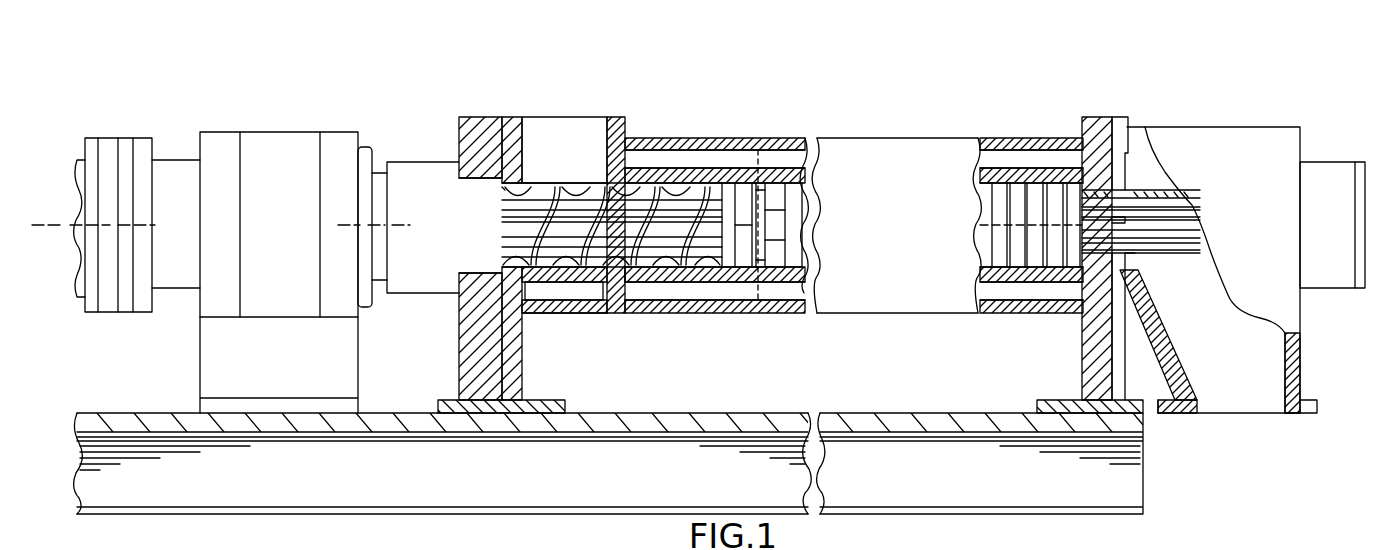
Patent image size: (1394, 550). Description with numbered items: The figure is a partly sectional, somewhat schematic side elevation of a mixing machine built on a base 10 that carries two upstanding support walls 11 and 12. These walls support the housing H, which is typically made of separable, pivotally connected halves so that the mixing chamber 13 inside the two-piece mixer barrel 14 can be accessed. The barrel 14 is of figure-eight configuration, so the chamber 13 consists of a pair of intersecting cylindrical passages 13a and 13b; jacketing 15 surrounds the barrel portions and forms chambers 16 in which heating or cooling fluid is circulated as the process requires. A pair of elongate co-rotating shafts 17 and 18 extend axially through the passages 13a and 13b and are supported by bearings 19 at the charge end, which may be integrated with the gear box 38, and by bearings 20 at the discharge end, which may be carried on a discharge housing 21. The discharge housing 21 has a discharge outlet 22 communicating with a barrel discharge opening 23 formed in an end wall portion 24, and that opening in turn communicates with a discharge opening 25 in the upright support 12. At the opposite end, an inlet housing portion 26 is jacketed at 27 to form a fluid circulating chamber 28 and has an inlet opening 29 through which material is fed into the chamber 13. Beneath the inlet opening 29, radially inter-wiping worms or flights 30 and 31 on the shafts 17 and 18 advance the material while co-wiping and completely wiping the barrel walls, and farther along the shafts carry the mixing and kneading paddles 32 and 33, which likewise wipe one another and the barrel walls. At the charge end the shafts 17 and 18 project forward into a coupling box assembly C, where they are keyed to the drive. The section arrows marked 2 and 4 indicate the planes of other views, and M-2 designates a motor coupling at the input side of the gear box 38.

The base 10 is at (880, 402).
The upstanding support wall 11 is at (460, 360).
The upstanding support wall 12 is at (1088, 369).
The mixing chamber 13 is at (643, 181).
The cylindrical passage 13a is at (688, 183).
The cylindrical passage 13b is at (707, 270).
The mixer barrel 14 is at (693, 273).
The jacketing 15 is at (778, 139).
The fluid chambers 16 is at (808, 160).
The co-rotating shaft 17 is at (1163, 192).
The co-rotating shaft 18 is at (1167, 237).
The bearings 19 is at (468, 250).
The bearings 20 is at (1312, 235).
The discharge housing 21 is at (1257, 135).
The discharge outlet 22 is at (1213, 410).
The barrel discharge opening 23 is at (1130, 262).
The end wall portion 24 is at (1122, 322).
The discharge opening 25 is at (1077, 300).
The inlet housing portion 26 is at (626, 118).
The jacket 27 is at (597, 288).
The fluid circulating chamber 28 is at (563, 304).
The inlet opening 29 is at (533, 117).
The worm flight 30 is at (549, 189).
The worm flight 31 is at (652, 282).
The mixing and kneading paddles 32 is at (798, 205).
The mixing and kneading paddles 33 is at (762, 240).
The gear box 38 is at (272, 128).
The section line 2- 2 is at (47, 248).
The flow direction arrows 4 is at (732, 161).
The coupling box assembly C is at (425, 156).
The housing H is at (753, 129).
The motor coupling M-2 is at (111, 134).